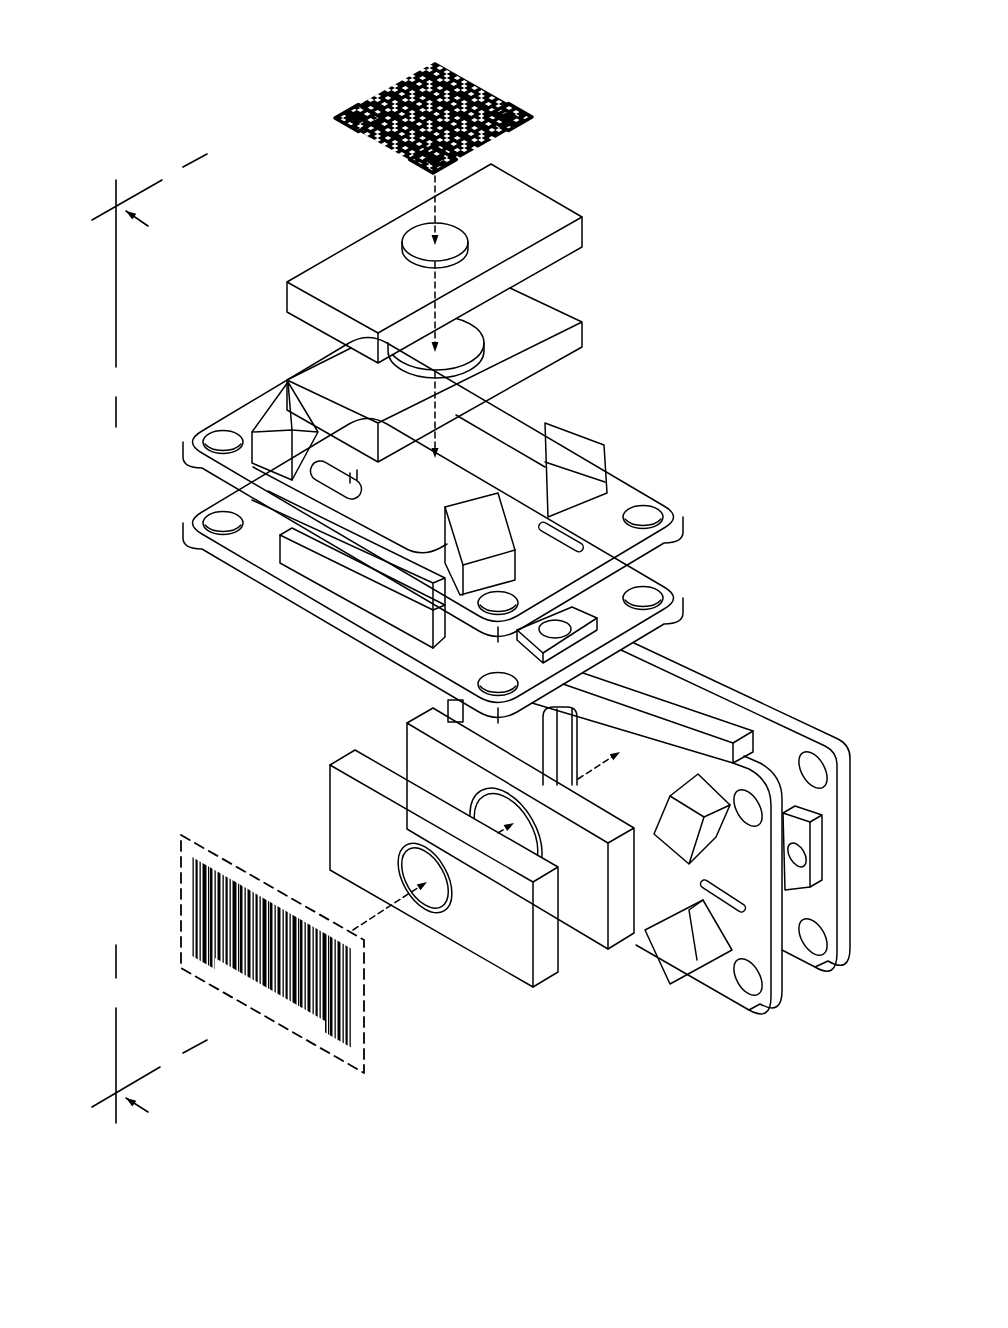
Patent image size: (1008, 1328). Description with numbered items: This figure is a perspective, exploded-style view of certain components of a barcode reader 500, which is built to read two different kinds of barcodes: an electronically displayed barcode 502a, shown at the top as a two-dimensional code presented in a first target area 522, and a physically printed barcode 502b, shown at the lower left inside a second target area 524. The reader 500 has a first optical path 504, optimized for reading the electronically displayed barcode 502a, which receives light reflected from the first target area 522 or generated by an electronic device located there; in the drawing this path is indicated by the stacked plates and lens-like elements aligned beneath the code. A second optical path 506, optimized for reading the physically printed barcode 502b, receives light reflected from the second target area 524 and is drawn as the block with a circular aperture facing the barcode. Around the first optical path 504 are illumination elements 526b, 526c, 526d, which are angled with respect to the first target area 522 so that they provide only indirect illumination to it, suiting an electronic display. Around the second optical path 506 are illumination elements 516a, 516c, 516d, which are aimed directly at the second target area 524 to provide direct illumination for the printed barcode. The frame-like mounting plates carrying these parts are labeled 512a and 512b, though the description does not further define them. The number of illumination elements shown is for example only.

The barcode reader 500 is at (722, 208).
The electronically displayed barcode 502a is at (458, 97).
The physically printed barcode 502b is at (317, 987).
The first optical path 504 is at (427, 210).
The second optical path 506 is at (378, 917).
The horizontal frame plates 512a is at (316, 566).
The vertical frame plates 512b is at (711, 718).
The illumination element 516a is at (455, 712).
The illumination element 516c is at (684, 820).
The illumination element 516d is at (664, 960).
The first target area 522 is at (507, 98).
The second target area 524 is at (178, 850).
The illumination element 526b is at (273, 420).
The illumination element 526c is at (590, 453).
The illumination element 526d is at (500, 534).